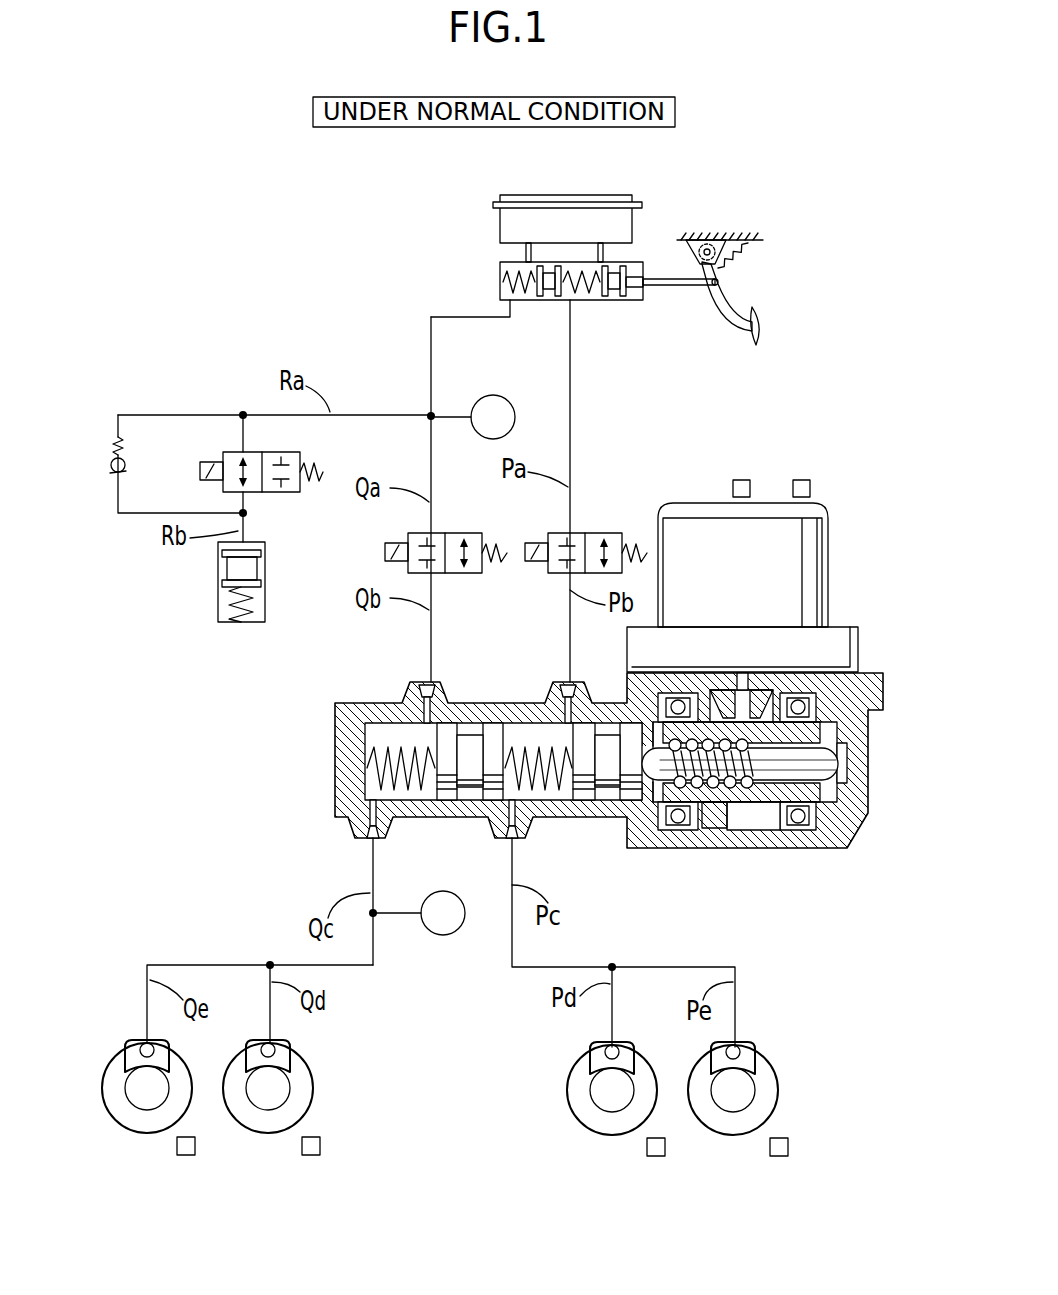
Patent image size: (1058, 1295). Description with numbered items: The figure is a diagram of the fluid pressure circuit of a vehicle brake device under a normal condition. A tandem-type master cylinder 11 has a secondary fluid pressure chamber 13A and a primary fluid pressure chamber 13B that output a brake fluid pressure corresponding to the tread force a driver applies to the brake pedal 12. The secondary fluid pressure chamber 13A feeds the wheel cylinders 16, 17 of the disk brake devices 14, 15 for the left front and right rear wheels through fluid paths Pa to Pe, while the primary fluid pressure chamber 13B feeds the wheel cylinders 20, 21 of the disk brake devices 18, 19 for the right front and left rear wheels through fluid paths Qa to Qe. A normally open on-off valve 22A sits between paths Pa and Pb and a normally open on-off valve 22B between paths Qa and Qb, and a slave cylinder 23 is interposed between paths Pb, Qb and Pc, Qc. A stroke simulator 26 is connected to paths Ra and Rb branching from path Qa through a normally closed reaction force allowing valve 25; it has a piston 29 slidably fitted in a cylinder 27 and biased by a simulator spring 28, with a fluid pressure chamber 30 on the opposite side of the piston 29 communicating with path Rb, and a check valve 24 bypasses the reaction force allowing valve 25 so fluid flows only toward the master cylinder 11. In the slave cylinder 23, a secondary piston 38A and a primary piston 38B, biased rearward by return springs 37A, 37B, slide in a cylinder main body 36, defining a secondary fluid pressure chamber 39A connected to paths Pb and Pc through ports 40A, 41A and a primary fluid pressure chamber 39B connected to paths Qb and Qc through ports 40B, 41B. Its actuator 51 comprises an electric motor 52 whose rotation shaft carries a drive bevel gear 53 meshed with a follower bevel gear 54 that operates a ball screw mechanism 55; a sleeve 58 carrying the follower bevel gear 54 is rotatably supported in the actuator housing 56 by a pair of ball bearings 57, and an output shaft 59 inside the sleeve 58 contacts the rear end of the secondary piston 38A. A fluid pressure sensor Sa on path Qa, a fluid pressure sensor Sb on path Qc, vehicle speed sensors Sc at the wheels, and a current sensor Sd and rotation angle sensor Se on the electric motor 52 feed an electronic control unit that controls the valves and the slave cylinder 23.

The tandem-type master cylinder 11 is at (534, 274).
The brake pedal 12 is at (760, 332).
The secondary fluid pressure chamber 13A is at (587, 298).
The primary fluid pressure chamber 13B is at (524, 298).
The disk brake device 14 is at (582, 1079).
The disk brake device 15 is at (763, 1067).
The wheel cylinder 16 is at (600, 1048).
The wheel cylinder 17 is at (745, 1051).
The disk brake device 18 is at (303, 1076).
The disk brake device 19 is at (123, 1061).
The wheel cylinder 20 is at (282, 1045).
The wheel cylinder 21 is at (140, 1046).
The on-off valve 22A is at (595, 530).
The on-off valve 22B is at (455, 530).
The slave cylinder 23 is at (600, 747).
The check valve 24 is at (108, 460).
The reaction force allowing valve 25 is at (306, 453).
The stroke simulator 26 is at (268, 583).
The cylinder 27 is at (265, 600).
The simulator spring 28 is at (249, 622).
The piston 29 is at (237, 566).
The fluid pressure chamber 30 is at (256, 548).
The cylinder main body 36 is at (504, 706).
The return spring 37A is at (546, 780).
The return spring 37B is at (410, 777).
The secondary piston 38A is at (630, 745).
The primary piston 38B is at (471, 745).
The secondary fluid pressure chamber 39A is at (537, 742).
The primary fluid pressure chamber 39B is at (385, 738).
The port 40A is at (569, 690).
The port 40B is at (429, 690).
The port 41A is at (508, 846).
The port 41B is at (368, 848).
The actuator 51 is at (762, 818).
The electric motor 52 is at (812, 598).
The drive bevel gear 53 is at (760, 700).
The follower bevel gear 54 is at (717, 814).
The ball screw mechanism 55 is at (695, 795).
The actuator housing 56 is at (830, 846).
The ball bearing 57 is at (685, 700).
The sleeve 58 is at (650, 797).
The output shaft 59 is at (805, 755).
The fluid pressure sensor Sa is at (502, 430).
The fluid pressure sensor Sb is at (443, 936).
The vehicle speed sensor Sc is at (196, 1148).
The current sensor Sd is at (742, 478).
The rotation angle sensor Se is at (812, 480).